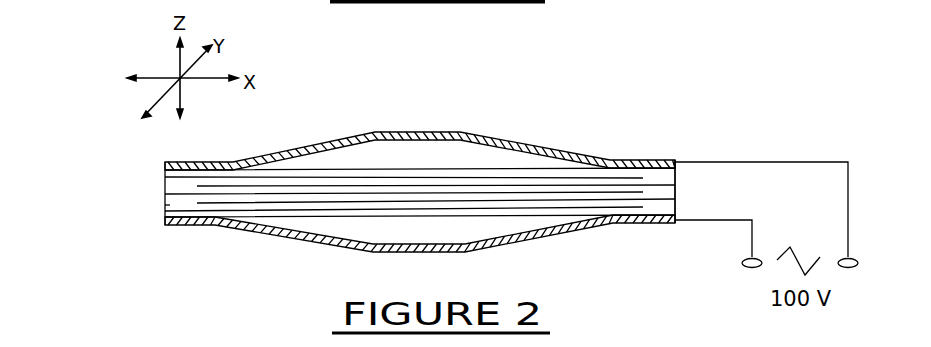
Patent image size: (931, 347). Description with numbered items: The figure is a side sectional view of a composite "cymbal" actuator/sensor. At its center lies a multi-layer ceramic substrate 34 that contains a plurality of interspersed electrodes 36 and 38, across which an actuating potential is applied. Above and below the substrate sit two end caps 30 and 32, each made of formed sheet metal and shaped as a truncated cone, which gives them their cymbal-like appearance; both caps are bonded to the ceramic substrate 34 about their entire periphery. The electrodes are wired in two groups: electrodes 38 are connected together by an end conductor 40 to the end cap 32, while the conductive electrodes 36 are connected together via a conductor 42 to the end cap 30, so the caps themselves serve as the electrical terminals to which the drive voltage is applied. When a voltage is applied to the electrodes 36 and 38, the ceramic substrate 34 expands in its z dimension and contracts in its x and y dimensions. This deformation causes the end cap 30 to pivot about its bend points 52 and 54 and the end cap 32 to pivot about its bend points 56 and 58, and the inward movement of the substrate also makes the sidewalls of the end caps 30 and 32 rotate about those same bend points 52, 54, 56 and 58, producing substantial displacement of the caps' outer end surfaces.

The end cap 30 is at (525, 143).
The end cap 32 is at (578, 234).
The multi-layer ceramic substrate 34 is at (160, 218).
The electrodes 36 is at (352, 172).
The electrodes 38 is at (340, 209).
The end conductor 40 is at (165, 207).
The conductor 42 is at (677, 190).
The bend point 52 is at (233, 162).
The bend point 54 is at (625, 160).
The bend point 56 is at (228, 224).
The bend point 58 is at (624, 222).